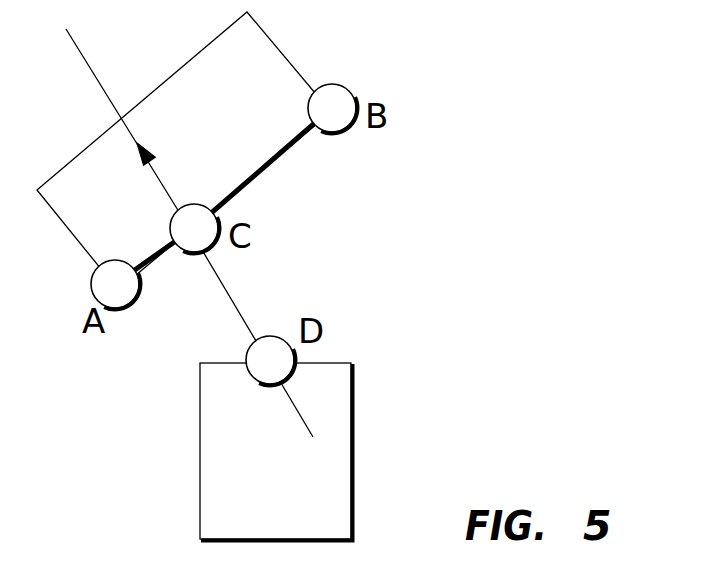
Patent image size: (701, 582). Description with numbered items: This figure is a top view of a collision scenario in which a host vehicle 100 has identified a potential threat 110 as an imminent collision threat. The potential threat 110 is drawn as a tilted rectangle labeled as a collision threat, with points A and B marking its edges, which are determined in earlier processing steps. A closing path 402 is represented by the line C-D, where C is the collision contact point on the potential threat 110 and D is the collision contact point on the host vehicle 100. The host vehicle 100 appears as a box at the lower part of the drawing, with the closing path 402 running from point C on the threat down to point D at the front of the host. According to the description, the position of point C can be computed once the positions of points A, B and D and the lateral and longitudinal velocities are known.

The potential threat 110 is at (158, 86).
The host vehicle 100 is at (355, 402).
The closing path 402 is at (236, 308).